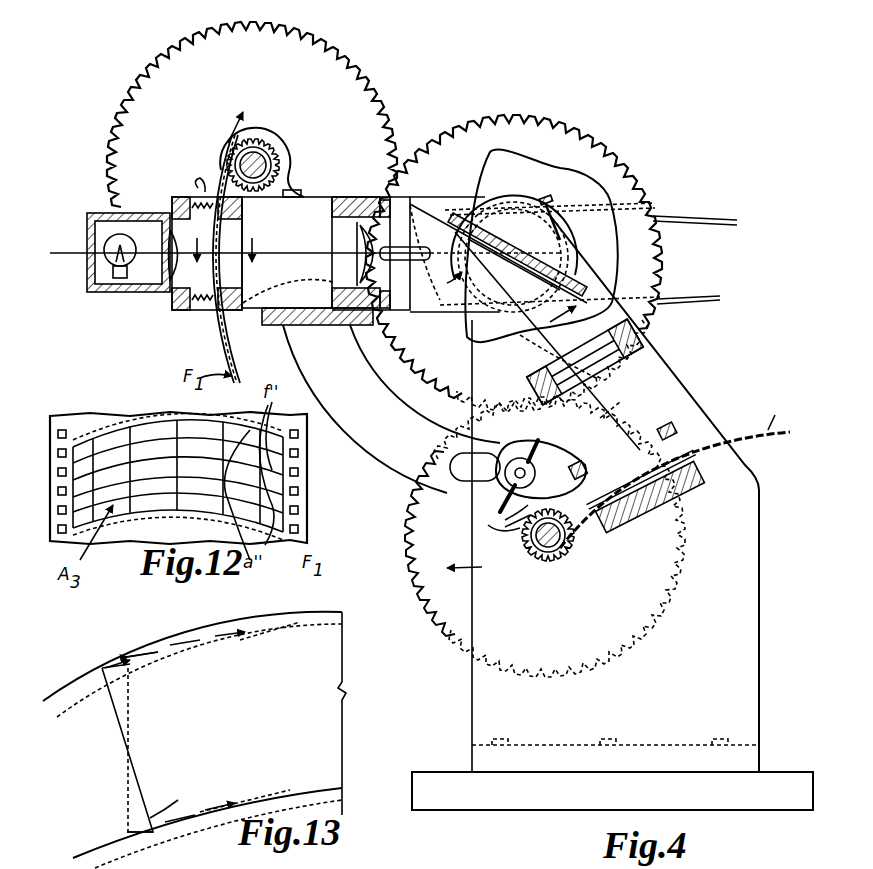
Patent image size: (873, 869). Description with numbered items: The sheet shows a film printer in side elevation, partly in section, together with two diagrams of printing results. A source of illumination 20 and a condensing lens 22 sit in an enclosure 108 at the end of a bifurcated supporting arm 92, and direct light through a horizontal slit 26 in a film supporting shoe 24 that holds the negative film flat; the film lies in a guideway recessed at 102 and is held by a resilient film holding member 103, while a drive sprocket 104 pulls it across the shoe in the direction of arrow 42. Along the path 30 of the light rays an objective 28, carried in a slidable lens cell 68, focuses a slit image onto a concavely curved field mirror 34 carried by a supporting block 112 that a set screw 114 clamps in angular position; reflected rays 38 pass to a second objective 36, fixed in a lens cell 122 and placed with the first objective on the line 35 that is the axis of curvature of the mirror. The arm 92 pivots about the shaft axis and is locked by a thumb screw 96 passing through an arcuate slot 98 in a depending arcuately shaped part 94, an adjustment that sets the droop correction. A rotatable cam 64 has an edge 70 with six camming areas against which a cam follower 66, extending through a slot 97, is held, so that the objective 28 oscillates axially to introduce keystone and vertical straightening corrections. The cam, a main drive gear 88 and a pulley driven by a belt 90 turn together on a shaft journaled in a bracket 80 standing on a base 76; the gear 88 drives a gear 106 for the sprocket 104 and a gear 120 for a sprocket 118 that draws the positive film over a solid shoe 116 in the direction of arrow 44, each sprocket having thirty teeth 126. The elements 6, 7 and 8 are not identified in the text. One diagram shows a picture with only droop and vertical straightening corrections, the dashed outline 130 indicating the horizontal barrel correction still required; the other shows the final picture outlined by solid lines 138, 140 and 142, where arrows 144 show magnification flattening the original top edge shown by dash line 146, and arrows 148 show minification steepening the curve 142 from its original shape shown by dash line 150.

In FIG. 4, the film guide pin 6 is at (658, 438).
In FIG. 4, the light rays 7 is at (223, 241).
In FIG. 4, the optical axis angle 8 is at (505, 303).
In FIG. 4, the source of illumination 20 is at (92, 259).
In FIG. 4, the condensing lens 22 is at (172, 262).
In FIG. 4, the film supporting shoe 24 is at (233, 310).
In FIG. 4, the horizontal slit 26 is at (266, 256).
In FIG. 4, the objective lens 28 is at (355, 255).
In FIG. 4, the path of the light rays 30 is at (278, 248).
In FIG. 4, the concavely cylindrically curved field mirror 34 is at (478, 215).
In FIG. 4, the line 35 is at (500, 320).
In FIG. 4, the objective lens 36 is at (650, 306).
In FIG. 4, the reflected rays 38 is at (597, 419).
In FIG. 4, the arrow 42 is at (240, 112).
In FIG. 4, the arrow 44 is at (466, 570).
In FIG. 4, the rotatable cam 64 is at (594, 206).
In FIG. 4, the cam follower 66 is at (425, 214).
In FIG. 4, the lens cell 68 is at (330, 240).
In FIG. 4, the cam edge 70 is at (523, 143).
In FIG. 4, the base 76 is at (432, 772).
In FIG. 4, the main supporting bracket 80 is at (670, 384).
In FIG. 4, the main drive gear 88 is at (582, 136).
In FIG. 4, the belt 90 is at (692, 220).
In FIG. 4, the bifurcated supporting arm 92 is at (346, 196).
In FIG. 4, the arcuately shaped part 94 is at (336, 440).
In FIG. 4, the thumb screw 96 is at (522, 458).
In FIG. 4, the slot 97 is at (386, 325).
In FIG. 4, the arcuate slot 98 is at (460, 481).
In FIG. 4, the recess 102 is at (285, 196).
In FIG. 4, the film holding member 103 is at (206, 187).
In FIG. 4, the drive sprocket 104 is at (247, 142).
In FIG. 4, the gear 106 is at (346, 72).
In FIG. 4, the enclosure 108 is at (102, 212).
In FIG. 4, the supporting block 112 is at (553, 246).
In FIG. 4, the set screw 114 is at (552, 206).
In FIG. 4, the shoe 116 is at (690, 472).
In FIG. 4, the sprocket 118 is at (548, 556).
In FIG. 4, the gear 120 is at (408, 538).
In FIG. 4, the lens cell 122 is at (625, 372).
In FIG. 4, the teeth 126 is at (503, 518).
In FIG. 12, the dashed outline 130 is at (92, 438).
In FIG. 13, the top line 138 is at (122, 656).
In FIG. 13, the solid line 140 is at (120, 736).
In FIG. 13, the curve 142 is at (212, 818).
In FIG. 13, the arrows 144 is at (172, 645).
In FIG. 13, the dash line 146 is at (252, 626).
In FIG. 13, the arrows 148 is at (207, 806).
In FIG. 13, the dash line 150 is at (232, 800).